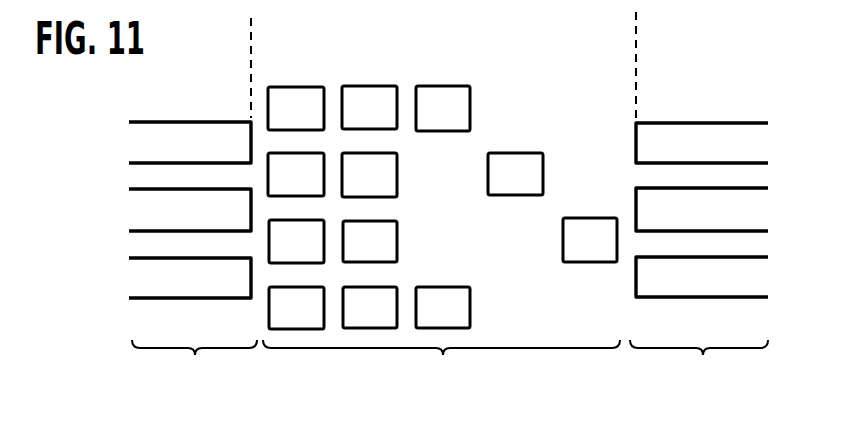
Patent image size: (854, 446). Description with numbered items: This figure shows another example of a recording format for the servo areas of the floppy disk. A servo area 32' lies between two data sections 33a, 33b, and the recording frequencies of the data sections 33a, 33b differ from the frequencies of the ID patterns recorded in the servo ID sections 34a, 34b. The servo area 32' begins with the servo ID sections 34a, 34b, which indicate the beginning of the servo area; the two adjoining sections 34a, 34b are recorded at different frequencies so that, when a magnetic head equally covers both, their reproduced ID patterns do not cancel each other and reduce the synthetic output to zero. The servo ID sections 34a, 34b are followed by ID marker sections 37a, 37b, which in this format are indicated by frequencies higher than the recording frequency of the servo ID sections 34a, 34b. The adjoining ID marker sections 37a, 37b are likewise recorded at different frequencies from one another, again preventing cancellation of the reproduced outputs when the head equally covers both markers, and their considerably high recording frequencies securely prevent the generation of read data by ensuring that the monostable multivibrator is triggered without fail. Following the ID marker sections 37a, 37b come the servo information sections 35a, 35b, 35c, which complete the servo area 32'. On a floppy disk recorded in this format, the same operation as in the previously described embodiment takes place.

The data section 33a is at (193, 257).
The data section 33b is at (699, 257).
The servo area 32' is at (441, 366).
The servo ID section 34a is at (310, 87).
The servo ID section 34b is at (280, 153).
The ID marker section 37a is at (378, 87).
The ID marker section 37b is at (397, 157).
The servo information section 35a is at (470, 87).
The servo information section 35b is at (556, 124).
The servo information section 35c is at (578, 218).